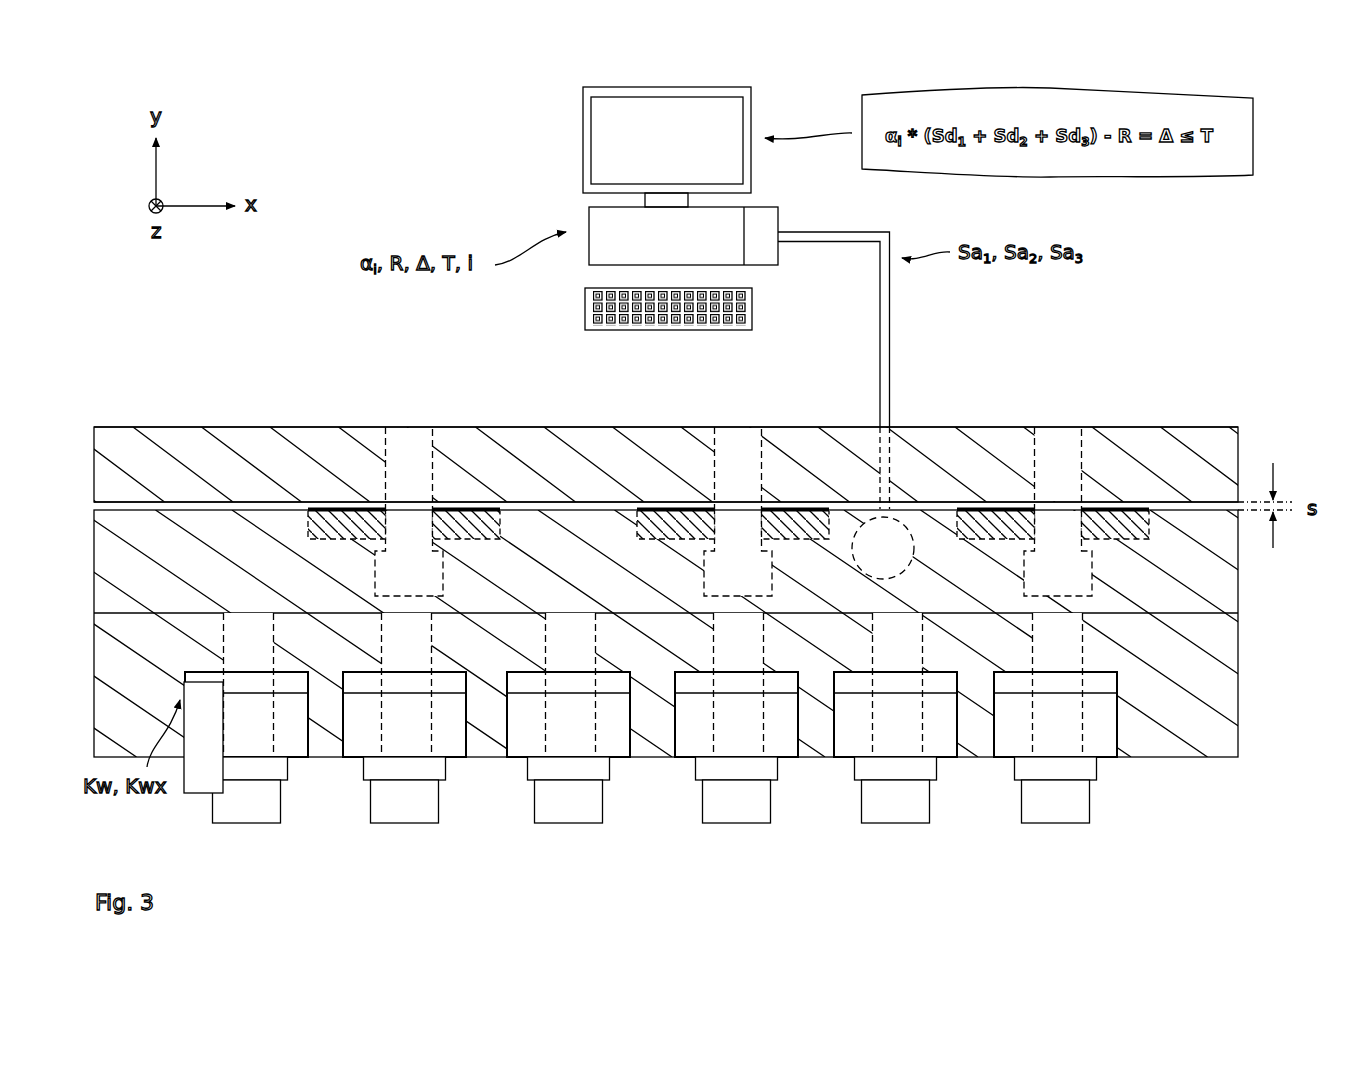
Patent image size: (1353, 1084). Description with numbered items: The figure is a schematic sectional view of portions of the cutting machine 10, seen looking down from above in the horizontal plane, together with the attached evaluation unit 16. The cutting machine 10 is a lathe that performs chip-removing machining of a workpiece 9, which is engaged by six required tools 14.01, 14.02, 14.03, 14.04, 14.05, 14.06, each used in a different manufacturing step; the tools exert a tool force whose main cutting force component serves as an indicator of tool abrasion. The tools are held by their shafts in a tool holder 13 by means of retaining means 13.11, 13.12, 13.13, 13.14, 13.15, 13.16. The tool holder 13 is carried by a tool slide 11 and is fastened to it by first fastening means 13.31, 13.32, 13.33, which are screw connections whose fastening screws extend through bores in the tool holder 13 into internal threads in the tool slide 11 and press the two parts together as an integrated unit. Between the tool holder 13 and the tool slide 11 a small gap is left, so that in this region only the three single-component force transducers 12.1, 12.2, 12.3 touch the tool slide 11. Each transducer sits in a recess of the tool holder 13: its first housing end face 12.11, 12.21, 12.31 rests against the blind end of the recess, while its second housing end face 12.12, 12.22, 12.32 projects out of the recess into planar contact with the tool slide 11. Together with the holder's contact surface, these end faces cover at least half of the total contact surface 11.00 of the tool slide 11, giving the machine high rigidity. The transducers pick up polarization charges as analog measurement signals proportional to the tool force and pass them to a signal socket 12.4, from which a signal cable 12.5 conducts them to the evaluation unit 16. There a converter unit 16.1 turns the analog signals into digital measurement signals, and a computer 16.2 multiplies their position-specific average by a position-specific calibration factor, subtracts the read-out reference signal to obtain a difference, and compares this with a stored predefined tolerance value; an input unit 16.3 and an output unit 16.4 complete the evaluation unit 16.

The workpiece 9 is at (211, 749).
The cutting machine 10 is at (1240, 282).
The tool slide 11 is at (176, 477).
The total contact surface of the tool slide 11.00 is at (228, 502).
The first single-component force transducer 12.1 is at (1130, 523).
The first housing end face of the first single-component force transducer 12.11 is at (970, 505).
The second housing end face of the first single-component force transducer 12.12 is at (1007, 500).
The second single-component force transducer 12.2 is at (815, 513).
The first housing end face of the second single-component force transducer 12.21 is at (650, 513).
The second housing end face of the second single-component force transducer 12.22 is at (685, 513).
The third single-component force transducer 12.3 is at (485, 503).
The first housing end face of the third single-component force transducer 12.31 is at (318, 508).
The second housing end face of the third single-component force transducer 12.32 is at (347, 503).
The signal socket 12.4 is at (903, 552).
The signal cable 12.5 is at (890, 335).
The tool holder 13 is at (176, 566).
The retaining means 13.11 is at (1062, 808).
The retaining means 13.12 is at (902, 808).
The retaining means 13.13 is at (744, 808).
The retaining means 13.14 is at (576, 808).
The retaining means 13.15 is at (412, 808).
The retaining means 13.16 is at (254, 808).
The first fastening means 13.31 is at (1063, 445).
The first fastening means 13.32 is at (742, 445).
The first fastening means 13.33 is at (410, 440).
The first tool 14.01 is at (1106, 745).
The second tool 14.02 is at (946, 745).
The third tool 14.03 is at (788, 745).
The fourth tool 14.04 is at (620, 745).
The fifth tool 14.05 is at (456, 745).
The sixth tool 14.06 is at (298, 745).
The evaluation unit 16 is at (659, 208).
The converter unit 16.1 is at (755, 220).
The computer 16.2 is at (694, 250).
The input unit 16.3 is at (748, 302).
The output unit 16.4 is at (688, 152).